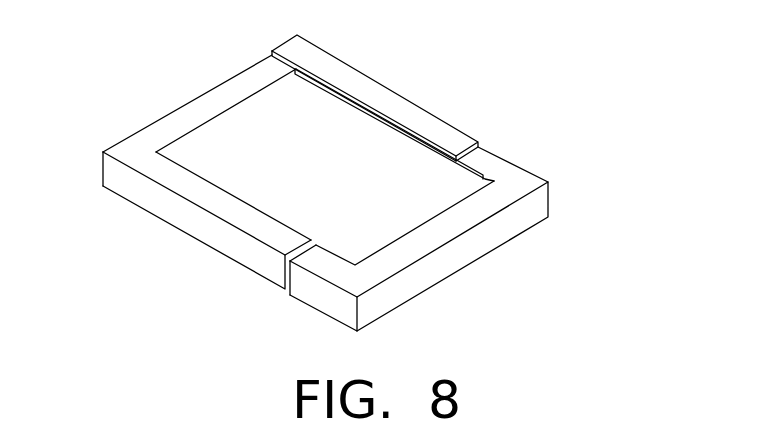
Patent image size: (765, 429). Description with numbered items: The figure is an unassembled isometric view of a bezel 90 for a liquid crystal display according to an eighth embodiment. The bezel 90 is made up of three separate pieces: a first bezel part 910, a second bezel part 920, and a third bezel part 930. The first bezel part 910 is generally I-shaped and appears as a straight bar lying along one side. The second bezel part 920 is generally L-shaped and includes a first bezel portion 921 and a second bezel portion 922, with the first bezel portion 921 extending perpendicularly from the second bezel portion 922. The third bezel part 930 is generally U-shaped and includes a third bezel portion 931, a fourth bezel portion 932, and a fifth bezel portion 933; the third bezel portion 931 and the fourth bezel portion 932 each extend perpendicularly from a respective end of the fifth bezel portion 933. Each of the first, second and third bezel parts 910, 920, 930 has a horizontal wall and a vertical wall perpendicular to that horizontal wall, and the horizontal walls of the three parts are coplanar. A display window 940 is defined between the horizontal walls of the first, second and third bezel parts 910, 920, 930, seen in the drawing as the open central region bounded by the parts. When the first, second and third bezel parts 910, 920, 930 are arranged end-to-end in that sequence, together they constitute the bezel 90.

The bezel 90 is at (254, 26).
The first bezel part 910 is at (358, 83).
The second bezel part 920 is at (194, 189).
The first bezel portion 921 is at (253, 257).
The second bezel portion 922 is at (183, 118).
The third bezel part 930 is at (452, 217).
The third bezel portion 931 is at (497, 163).
The fourth bezel portion 932 is at (333, 300).
The fifth bezel portion 933 is at (470, 245).
The display window 940 is at (392, 150).